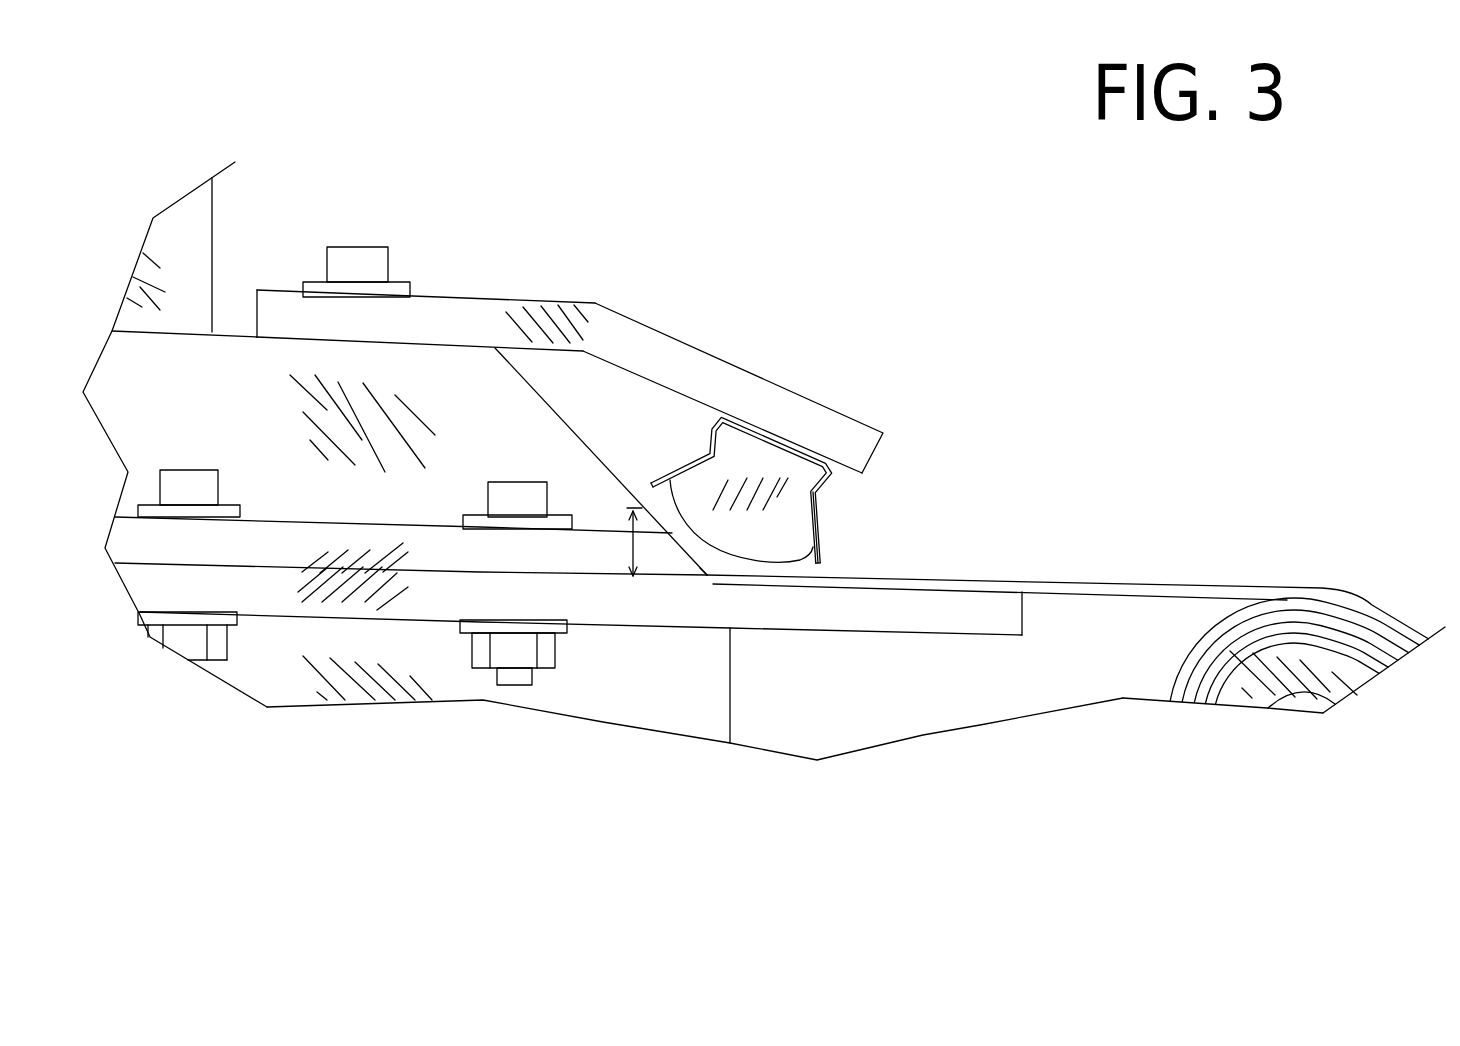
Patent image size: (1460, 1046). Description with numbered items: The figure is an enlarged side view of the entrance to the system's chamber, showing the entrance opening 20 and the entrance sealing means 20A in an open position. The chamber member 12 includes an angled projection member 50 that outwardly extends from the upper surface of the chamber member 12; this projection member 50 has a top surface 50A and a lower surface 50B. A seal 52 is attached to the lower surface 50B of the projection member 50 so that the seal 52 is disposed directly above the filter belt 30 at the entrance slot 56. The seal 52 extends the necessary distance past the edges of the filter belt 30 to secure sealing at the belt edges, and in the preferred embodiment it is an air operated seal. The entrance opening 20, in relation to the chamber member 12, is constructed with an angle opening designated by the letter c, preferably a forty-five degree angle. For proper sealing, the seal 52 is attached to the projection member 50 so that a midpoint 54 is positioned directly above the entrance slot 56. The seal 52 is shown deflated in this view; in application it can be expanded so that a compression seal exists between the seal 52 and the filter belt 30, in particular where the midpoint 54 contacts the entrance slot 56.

The chamber member 12 is at (170, 237).
The entrance opening 20 is at (570, 430).
The entrance sealing means 20A is at (847, 500).
The filter belt 30 is at (1110, 582).
The projection member 50 is at (572, 302).
The top surface 50A is at (642, 320).
The lower surface 50B is at (627, 373).
The seal 52 is at (707, 438).
The midpoint 54 is at (717, 542).
The entrance slot 56 is at (700, 587).
The angle opening c is at (637, 542).